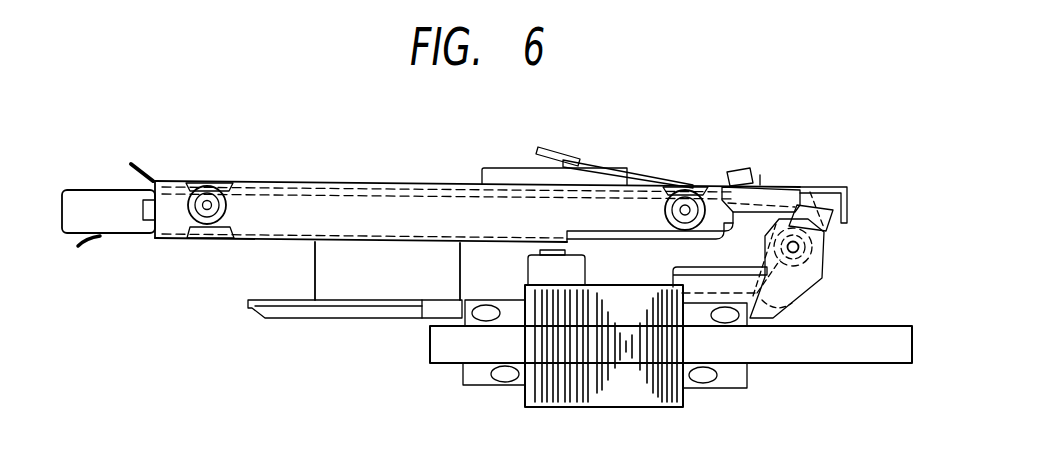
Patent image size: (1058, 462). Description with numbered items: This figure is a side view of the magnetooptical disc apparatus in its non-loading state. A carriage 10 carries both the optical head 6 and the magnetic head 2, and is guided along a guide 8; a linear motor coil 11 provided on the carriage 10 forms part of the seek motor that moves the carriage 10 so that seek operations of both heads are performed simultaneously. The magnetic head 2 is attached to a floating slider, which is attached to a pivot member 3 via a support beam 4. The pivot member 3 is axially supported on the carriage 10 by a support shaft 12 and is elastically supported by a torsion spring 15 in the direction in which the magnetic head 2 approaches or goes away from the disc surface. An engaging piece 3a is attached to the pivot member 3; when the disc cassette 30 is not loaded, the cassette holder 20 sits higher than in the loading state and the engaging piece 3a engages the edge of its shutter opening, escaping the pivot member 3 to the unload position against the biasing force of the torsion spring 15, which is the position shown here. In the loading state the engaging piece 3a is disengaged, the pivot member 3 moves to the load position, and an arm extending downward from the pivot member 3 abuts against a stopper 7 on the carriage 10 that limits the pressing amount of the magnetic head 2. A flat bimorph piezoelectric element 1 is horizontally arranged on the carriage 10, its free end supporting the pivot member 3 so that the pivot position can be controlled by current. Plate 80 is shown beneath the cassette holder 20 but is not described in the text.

The piezoelectric element 1 is at (717, 267).
The magnetic head 2 is at (565, 153).
The pivot member 3 is at (823, 222).
The engaging piece 3a is at (741, 168).
The support beam 4 is at (643, 173).
The optical head 6 is at (540, 271).
The stopper 7 is at (795, 308).
The guide 8 is at (856, 364).
The carriage 10 is at (483, 376).
The linear motor coil 11 is at (625, 390).
The support shaft 12 is at (824, 266).
The torsion spring 15 is at (826, 215).
The cassette holder 20 is at (333, 197).
The disc cassette 30 is at (110, 222).
The base plate 80 is at (355, 285).